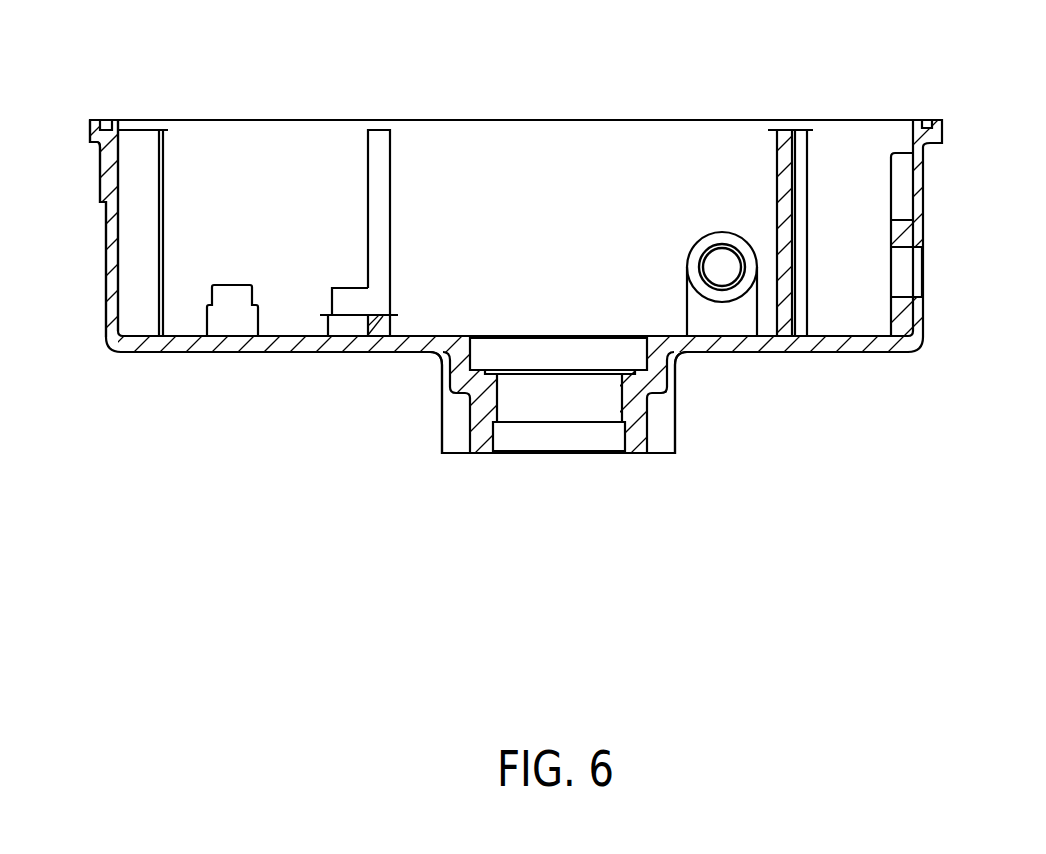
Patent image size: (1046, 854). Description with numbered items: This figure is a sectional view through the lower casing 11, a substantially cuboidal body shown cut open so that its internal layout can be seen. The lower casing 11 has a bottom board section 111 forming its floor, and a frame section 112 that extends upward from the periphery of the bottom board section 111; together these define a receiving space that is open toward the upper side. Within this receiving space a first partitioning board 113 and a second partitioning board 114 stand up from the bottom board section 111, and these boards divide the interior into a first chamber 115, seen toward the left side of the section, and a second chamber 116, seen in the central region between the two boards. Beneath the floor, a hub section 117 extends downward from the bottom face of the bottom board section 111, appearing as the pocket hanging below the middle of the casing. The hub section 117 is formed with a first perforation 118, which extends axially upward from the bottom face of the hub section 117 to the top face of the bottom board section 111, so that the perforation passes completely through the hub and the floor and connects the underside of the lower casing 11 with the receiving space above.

The lower casing 11 is at (772, 378).
The bottom board section 111 is at (182, 345).
The frame section 112 is at (97, 165).
The first partitioning board 113 is at (375, 185).
The second partitioning board 114 is at (778, 185).
The first chamber 115 is at (258, 185).
The second chamber 116 is at (557, 165).
The hub section 117 is at (443, 417).
The first perforation 118 is at (560, 402).